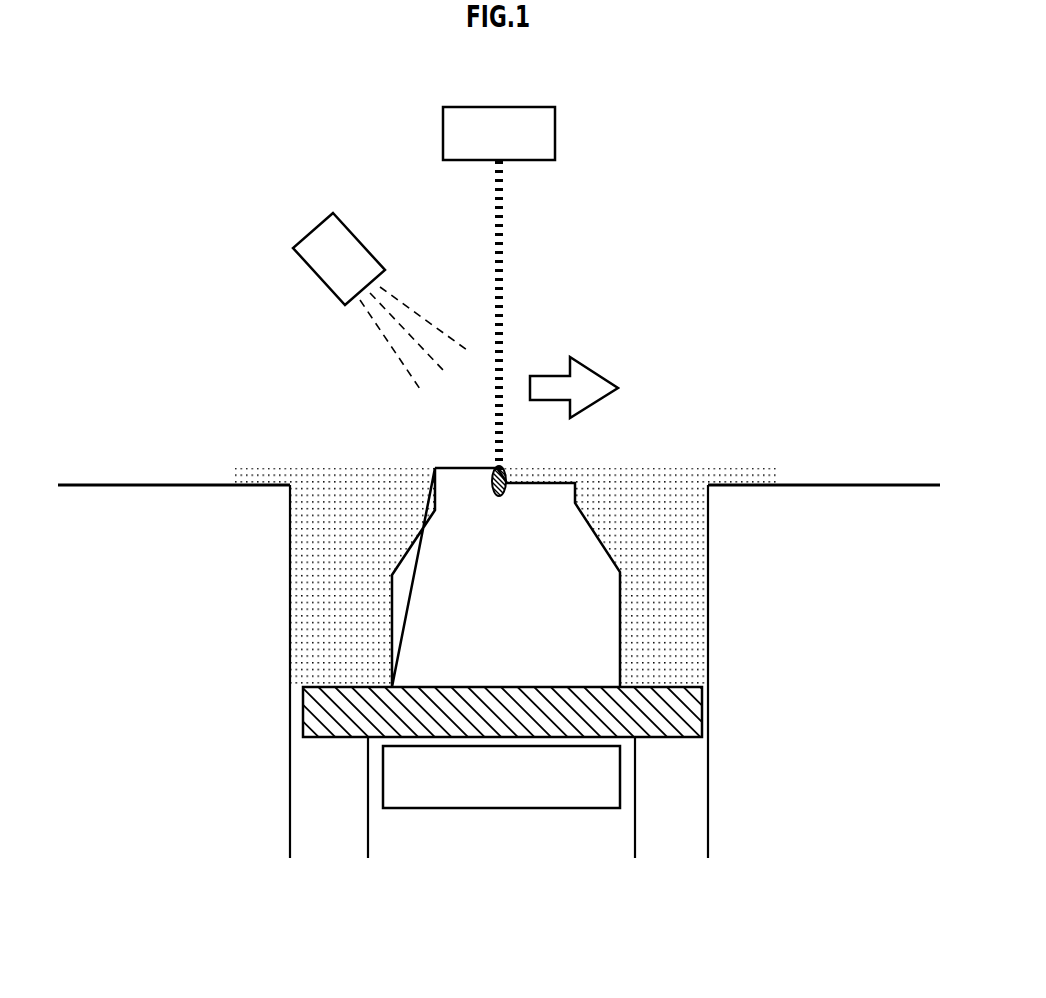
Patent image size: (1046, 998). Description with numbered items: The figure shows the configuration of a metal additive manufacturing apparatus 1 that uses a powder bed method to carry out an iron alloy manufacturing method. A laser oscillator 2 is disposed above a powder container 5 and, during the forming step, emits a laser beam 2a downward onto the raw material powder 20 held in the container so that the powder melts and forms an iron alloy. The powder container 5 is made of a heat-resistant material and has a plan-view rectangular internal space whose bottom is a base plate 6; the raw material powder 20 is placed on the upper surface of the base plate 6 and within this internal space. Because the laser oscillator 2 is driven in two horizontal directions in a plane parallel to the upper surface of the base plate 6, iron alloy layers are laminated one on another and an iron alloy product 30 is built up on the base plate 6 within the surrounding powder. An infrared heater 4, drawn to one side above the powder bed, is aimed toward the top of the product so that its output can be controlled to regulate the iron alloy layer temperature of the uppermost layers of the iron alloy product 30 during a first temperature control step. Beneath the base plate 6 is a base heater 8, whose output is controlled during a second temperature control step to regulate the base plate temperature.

The metal additive manufacturing apparatus 1 is at (734, 230).
The laser oscillator 2 is at (538, 107).
The laser beam 2a is at (524, 270).
The infrared heater 4 is at (316, 234).
The powder container 5 is at (92, 484).
The base plate 6 is at (655, 738).
The base heater 8 is at (580, 808).
The raw material powder 20 is at (683, 470).
The iron alloy product 30 is at (468, 468).